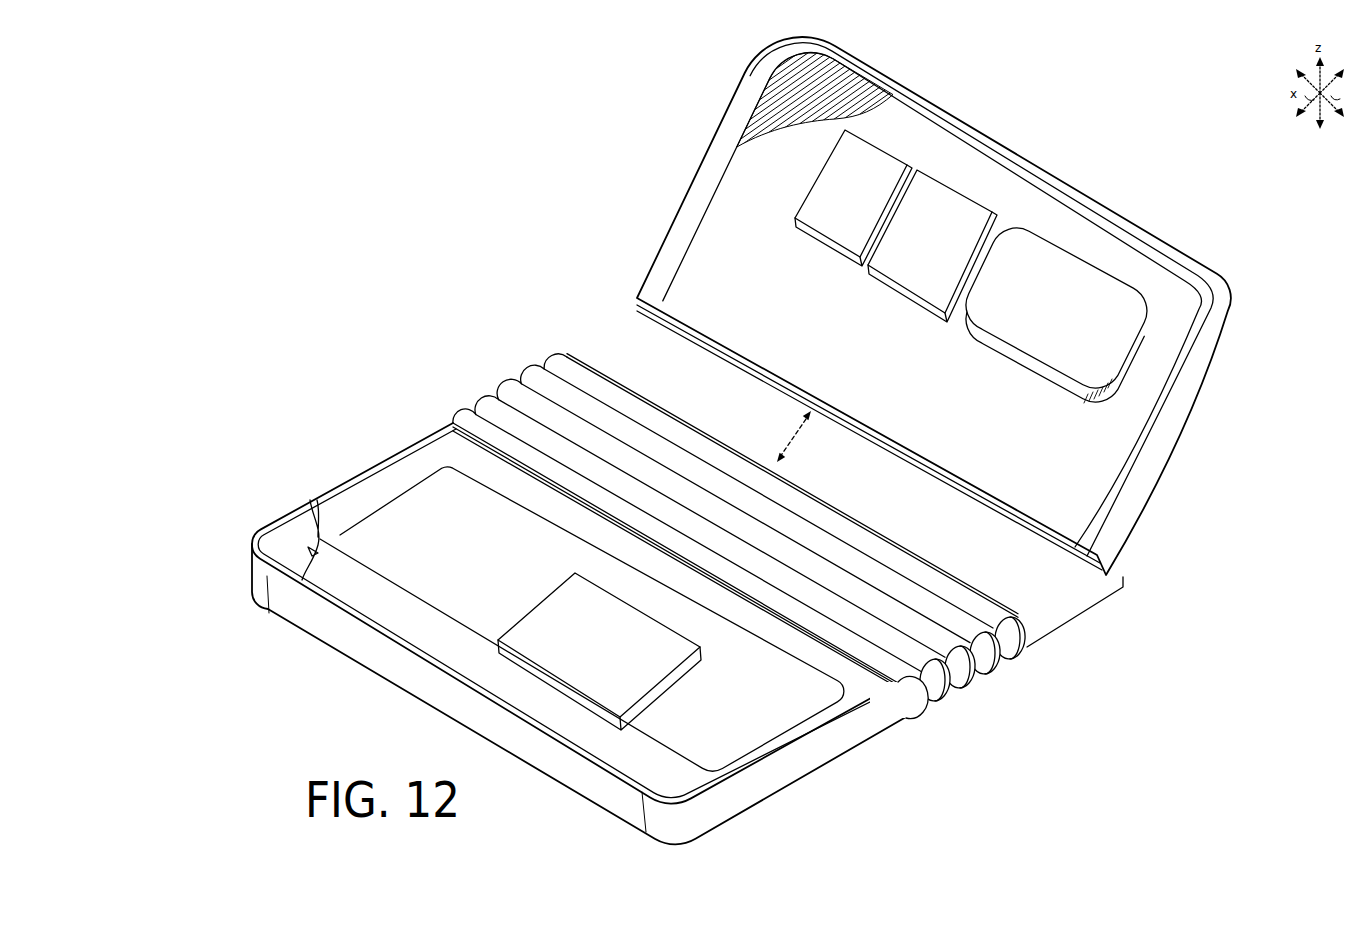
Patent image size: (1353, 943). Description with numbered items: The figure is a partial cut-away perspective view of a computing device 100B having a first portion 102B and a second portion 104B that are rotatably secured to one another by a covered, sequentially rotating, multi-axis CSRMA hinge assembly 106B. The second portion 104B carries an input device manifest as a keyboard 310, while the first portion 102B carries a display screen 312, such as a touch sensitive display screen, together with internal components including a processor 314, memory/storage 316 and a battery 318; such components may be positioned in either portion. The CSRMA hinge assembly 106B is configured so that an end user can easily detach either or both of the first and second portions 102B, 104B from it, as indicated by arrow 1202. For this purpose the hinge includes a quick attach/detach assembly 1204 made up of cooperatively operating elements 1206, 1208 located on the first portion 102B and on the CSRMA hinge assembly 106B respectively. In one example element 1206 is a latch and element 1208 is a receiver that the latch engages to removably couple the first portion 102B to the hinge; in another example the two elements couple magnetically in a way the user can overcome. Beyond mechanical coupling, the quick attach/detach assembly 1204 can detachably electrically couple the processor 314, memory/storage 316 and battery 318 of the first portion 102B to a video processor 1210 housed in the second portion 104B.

The computing device 100B is at (337, 98).
The first portion 102B is at (995, 131).
The second portion 104B is at (366, 677).
The CSRMA hinge assembly 106B is at (999, 673).
The keyboard 310 is at (298, 524).
The display screen 312 is at (752, 93).
The processor 314 is at (853, 198).
The memory/storage 316 is at (932, 246).
The battery 318 is at (1056, 315).
The arrow 1202 is at (795, 437).
The quick attach/detach assembly 1204 is at (1082, 622).
The element 1206 is at (931, 465).
The element 1208 is at (921, 552).
The video processor 1210 is at (599, 651).